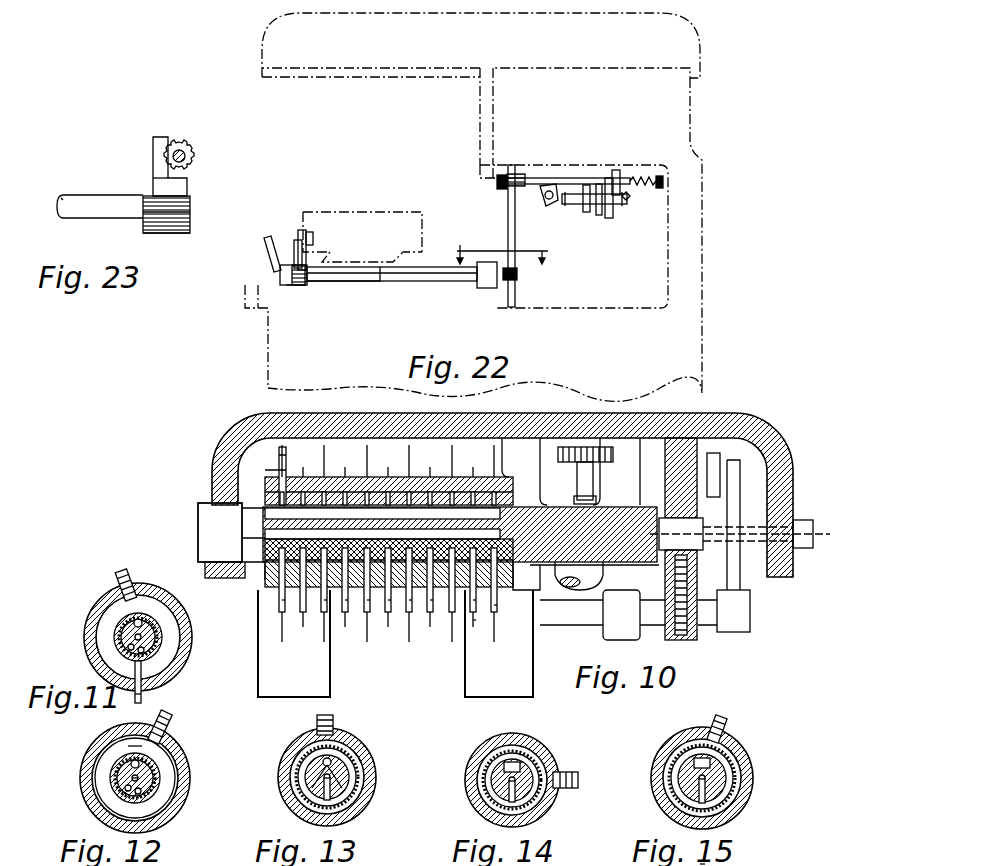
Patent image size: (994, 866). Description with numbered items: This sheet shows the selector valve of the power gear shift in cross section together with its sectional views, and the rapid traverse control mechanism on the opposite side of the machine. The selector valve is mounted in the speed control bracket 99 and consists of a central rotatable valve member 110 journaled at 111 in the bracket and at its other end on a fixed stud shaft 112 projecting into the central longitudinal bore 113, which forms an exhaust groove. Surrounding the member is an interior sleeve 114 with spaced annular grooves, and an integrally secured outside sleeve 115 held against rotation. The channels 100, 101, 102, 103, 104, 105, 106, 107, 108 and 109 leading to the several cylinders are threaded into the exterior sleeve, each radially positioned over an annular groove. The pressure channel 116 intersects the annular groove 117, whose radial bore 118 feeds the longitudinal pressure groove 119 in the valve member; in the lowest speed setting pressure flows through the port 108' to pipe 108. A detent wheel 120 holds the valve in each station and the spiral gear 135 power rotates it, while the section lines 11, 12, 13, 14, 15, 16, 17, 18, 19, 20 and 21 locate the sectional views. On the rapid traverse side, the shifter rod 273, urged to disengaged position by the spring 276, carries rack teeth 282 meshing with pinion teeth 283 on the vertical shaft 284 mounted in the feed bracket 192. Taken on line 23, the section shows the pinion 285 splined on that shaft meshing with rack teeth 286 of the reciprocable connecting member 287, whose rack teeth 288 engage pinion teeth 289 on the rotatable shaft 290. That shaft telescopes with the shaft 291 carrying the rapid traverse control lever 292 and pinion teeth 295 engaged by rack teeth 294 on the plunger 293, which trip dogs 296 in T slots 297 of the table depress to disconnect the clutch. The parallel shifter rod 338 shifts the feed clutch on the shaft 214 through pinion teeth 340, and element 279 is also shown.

In FIG. 10, the speed control bracket 99 is at (705, 416).
In FIG. 10, the channel 100 is at (347, 618).
In FIG. 14, the channel 100 is at (570, 772).
In FIG. 10, the channel 101 is at (410, 618).
In FIG. 10, the channel 102 is at (368, 618).
In FIG. 15, the channel 102 is at (727, 728).
In FIG. 10, the channel 103 is at (390, 618).
In FIG. 10, the channel 104 is at (325, 618).
In FIG. 13, the channel 104 is at (334, 722).
In FIG. 10, the channel 105 is at (432, 618).
In FIG. 10, the channel 106 is at (475, 618).
In FIG. 15, the channel 106 is at (705, 865).
In FIG. 10, the channel 107 is at (497, 610).
In FIG. 10, the channel 108 is at (252, 618).
In FIG. 12, the channel 108 is at (176, 727).
In FIG. 12, the port 108' is at (107, 729).
In FIG. 10, the channel 109 is at (478, 620).
In FIG. 10, the central rotatable valve member 110 is at (546, 514).
In FIG. 12, the central rotatable valve member 110 is at (150, 768).
In FIG. 10, the journal 111 is at (672, 510).
In FIG. 10, the fixed stud shaft 112 is at (205, 524).
In FIG. 10, the central longitudinal bore 113 is at (528, 598).
In FIG. 12, the central longitudinal bore 113 is at (132, 779).
In FIG. 13, the central longitudinal bore 113 is at (302, 795).
In FIG. 14, the central longitudinal bore 113 is at (510, 781).
In FIG. 15, the central longitudinal bore 113 is at (700, 780).
In FIG. 10, the sleeve 114 is at (262, 580).
In FIG. 12, the sleeve 114 is at (175, 788).
In FIG. 10, the outside sleeve 115 is at (264, 590).
In FIG. 12, the outside sleeve 115 is at (188, 800).
In FIG. 10, the pressure channel 116 is at (280, 452).
In FIG. 11, the pressure channel 116 is at (115, 579).
In FIG. 10, the annular groove 117 is at (268, 480).
In FIG. 11, the annular groove 117 is at (96, 620).
In FIG. 10, the radial bore 118 is at (266, 495).
In FIG. 11, the radial bore 118 is at (140, 600).
In FIG. 10, the longitudinal pressure groove 119 is at (264, 510).
In FIG. 11, the longitudinal pressure groove 119 is at (150, 605).
In FIG. 12, the longitudinal pressure groove 119 is at (108, 758).
In FIG. 13, the longitudinal pressure groove 119 is at (300, 770).
In FIG. 14, the longitudinal pressure groove 119 is at (482, 760).
In FIG. 15, the longitudinal pressure groove 119 is at (680, 745).
In FIG. 10, the detent wheel 120 is at (675, 520).
In FIG. 10, the spiral gear 135 is at (593, 500).
In FIG. 10, the section line 11 is at (281, 639).
In FIG. 10, the section line 12 is at (302, 624).
In FIG. 10, the section line 13 is at (323, 639).
In FIG. 10, the section line 14 is at (344, 624).
In FIG. 10, the section line 15 is at (366, 639).
In FIG. 10, the section line 16 is at (387, 624).
In FIG. 10, the section line 17 is at (408, 639).
In FIG. 10, the section line 18 is at (429, 624).
In FIG. 10, the section line 19 is at (451, 639).
In FIG. 10, the section line 20 is at (472, 624).
In FIG. 10, the section line 21 is at (493, 639).
In FIG. 22, the section line 23 is at (496, 261).
In FIG. 22, the feed bracket 192 is at (610, 178).
In FIG. 22, the shaft 214 is at (582, 205).
In FIG. 22, the shifter rod 273 is at (567, 165).
In FIG. 22, the spring 276 is at (648, 164).
In FIG. 22, the cam 279 is at (549, 206).
In FIG. 22, the rack teeth 282 is at (522, 180).
In FIG. 22, the pinion teeth 283 is at (520, 176).
In FIG. 23, the vertical shaft 284 is at (190, 150).
In FIG. 22, the vertical shaft 284 is at (516, 232).
In FIG. 23, the pinion 285 is at (186, 158).
In FIG. 23, the rack teeth 286 is at (172, 140).
In FIG. 23, the reciprocable connecting member 287 is at (156, 178).
In FIG. 22, the reciprocable connecting member 287 is at (517, 282).
In FIG. 23, the rack teeth 288 is at (178, 234).
In FIG. 23, the pinion teeth 289 is at (192, 212).
In FIG. 23, the rotatable shaft 290 is at (100, 220).
In FIG. 22, the rotatable shaft 290 is at (446, 282).
In FIG. 22, the shaft 291 is at (280, 276).
In FIG. 22, the rapid traverse control lever 292 is at (268, 255).
In FIG. 22, the plunger 293 is at (293, 248).
In FIG. 22, the rack teeth 294 is at (302, 285).
In FIG. 22, the pinion teeth 295 is at (292, 288).
In FIG. 22, the trip dog 296 is at (304, 232).
In FIG. 22, the T slot 297 is at (314, 238).
In FIG. 22, the shifter rod 338 is at (590, 190).
In FIG. 22, the pinion teeth 340 is at (632, 200).